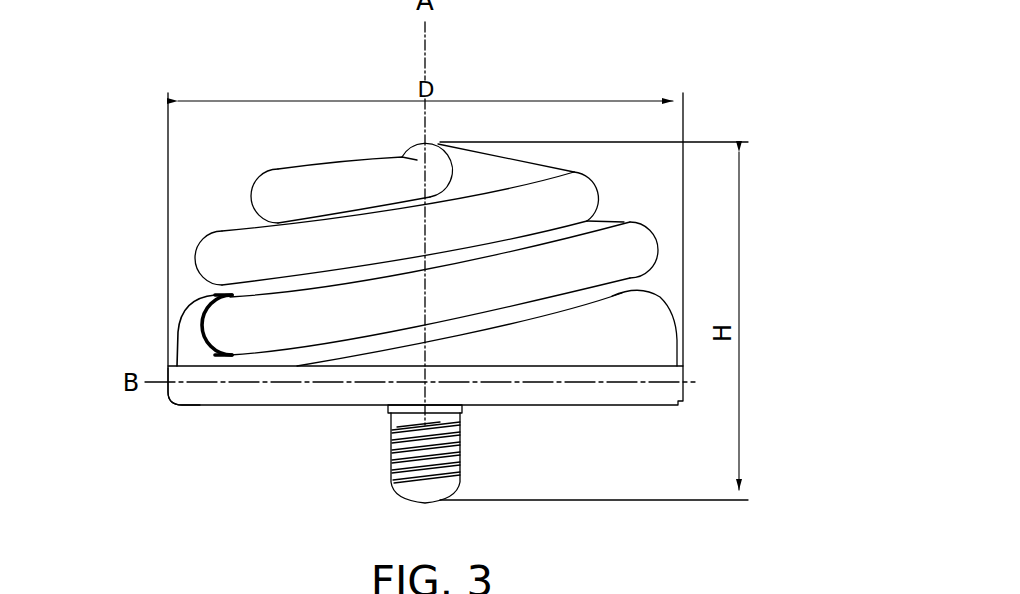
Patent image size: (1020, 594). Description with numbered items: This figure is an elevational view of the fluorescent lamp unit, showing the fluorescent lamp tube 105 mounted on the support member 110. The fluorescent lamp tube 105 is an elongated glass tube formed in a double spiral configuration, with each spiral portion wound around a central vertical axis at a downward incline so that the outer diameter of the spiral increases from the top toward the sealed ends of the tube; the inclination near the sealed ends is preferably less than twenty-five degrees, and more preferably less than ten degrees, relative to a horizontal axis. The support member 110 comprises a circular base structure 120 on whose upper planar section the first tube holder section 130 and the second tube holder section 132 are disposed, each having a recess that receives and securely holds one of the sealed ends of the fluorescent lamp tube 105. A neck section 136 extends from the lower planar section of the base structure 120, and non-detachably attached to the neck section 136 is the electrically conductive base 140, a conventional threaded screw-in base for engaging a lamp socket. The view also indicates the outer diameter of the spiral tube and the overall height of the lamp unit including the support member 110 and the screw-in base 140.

The fluorescent lamp tube 105 is at (263, 189).
The support member 110 is at (683, 372).
The circular base structure 120 is at (172, 392).
The first tube holder section 130 is at (190, 299).
The second tube holder section 132 is at (643, 316).
The neck section 136 is at (463, 408).
The electrically conductive base 140 is at (417, 490).